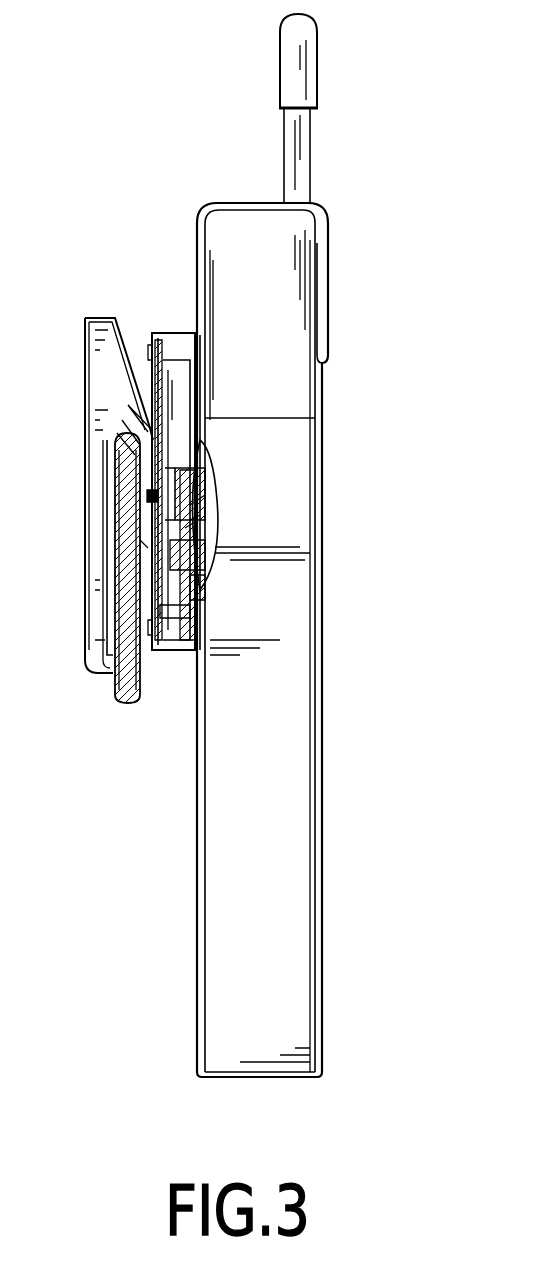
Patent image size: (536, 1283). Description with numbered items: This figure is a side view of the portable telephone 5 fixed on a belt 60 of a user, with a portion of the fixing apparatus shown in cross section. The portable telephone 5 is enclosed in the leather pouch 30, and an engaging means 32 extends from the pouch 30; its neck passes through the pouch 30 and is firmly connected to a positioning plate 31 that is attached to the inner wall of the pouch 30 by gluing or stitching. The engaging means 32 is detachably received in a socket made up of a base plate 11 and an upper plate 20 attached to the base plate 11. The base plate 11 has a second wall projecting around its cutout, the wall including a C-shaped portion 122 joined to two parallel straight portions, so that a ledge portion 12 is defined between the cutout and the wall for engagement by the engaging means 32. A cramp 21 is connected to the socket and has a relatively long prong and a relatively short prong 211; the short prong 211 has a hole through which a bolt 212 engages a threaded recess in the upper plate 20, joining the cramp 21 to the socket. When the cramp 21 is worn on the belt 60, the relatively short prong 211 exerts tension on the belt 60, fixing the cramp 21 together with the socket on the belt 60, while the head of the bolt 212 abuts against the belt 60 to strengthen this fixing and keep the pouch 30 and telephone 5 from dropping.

The portable telephone 5 is at (311, 149).
The base plate 11 is at (178, 332).
The ledge portion 12 is at (197, 378).
The upper plate 20 is at (160, 375).
The cramp 21 is at (97, 543).
The relatively short prong 211 is at (140, 543).
The bolt 212 is at (150, 501).
The leather pouch 30 is at (322, 604).
The positioning plate 31 is at (205, 488).
The engaging means 32 is at (212, 438).
The belt 60 is at (126, 702).
The C-shaped portion 122 is at (200, 580).